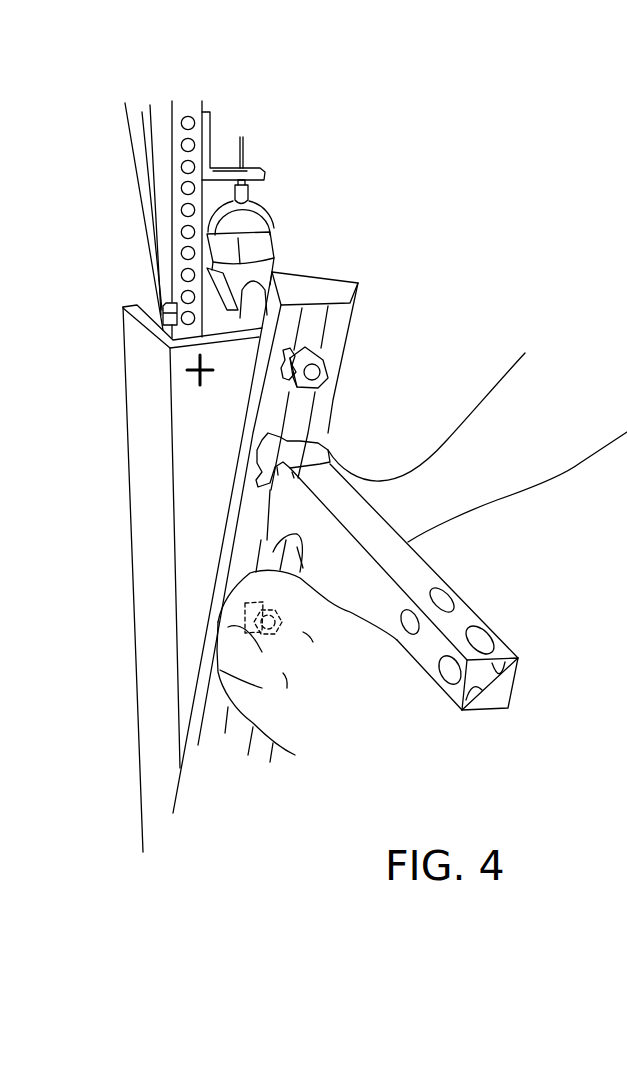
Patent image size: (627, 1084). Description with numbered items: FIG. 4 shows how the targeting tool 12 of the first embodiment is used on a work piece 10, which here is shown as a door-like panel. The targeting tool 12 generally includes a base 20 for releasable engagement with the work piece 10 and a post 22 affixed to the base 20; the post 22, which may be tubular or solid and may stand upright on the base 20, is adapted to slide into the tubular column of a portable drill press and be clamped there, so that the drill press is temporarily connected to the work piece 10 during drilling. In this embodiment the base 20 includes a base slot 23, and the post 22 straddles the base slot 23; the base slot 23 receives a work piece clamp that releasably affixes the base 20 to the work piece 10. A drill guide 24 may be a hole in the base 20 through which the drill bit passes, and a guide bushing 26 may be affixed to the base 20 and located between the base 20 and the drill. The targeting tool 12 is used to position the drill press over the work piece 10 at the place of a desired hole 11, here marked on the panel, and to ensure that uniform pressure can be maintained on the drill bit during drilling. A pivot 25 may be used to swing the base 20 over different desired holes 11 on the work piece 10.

The work piece 10 is at (148, 502).
The desired hole 11 is at (187, 380).
The targeting tool 12 is at (395, 362).
The base 20 is at (337, 338).
The post 22 is at (423, 575).
The base slot 23 is at (317, 313).
The drill guide 24 is at (323, 367).
The pivot 25 is at (237, 607).
The guide bushing 26 is at (322, 385).